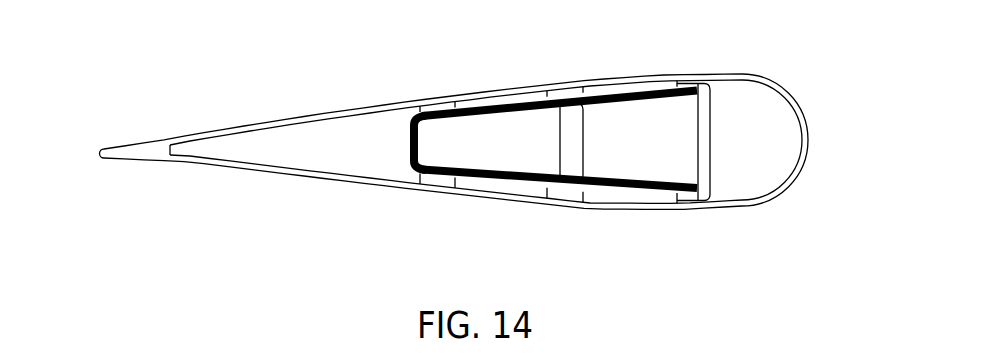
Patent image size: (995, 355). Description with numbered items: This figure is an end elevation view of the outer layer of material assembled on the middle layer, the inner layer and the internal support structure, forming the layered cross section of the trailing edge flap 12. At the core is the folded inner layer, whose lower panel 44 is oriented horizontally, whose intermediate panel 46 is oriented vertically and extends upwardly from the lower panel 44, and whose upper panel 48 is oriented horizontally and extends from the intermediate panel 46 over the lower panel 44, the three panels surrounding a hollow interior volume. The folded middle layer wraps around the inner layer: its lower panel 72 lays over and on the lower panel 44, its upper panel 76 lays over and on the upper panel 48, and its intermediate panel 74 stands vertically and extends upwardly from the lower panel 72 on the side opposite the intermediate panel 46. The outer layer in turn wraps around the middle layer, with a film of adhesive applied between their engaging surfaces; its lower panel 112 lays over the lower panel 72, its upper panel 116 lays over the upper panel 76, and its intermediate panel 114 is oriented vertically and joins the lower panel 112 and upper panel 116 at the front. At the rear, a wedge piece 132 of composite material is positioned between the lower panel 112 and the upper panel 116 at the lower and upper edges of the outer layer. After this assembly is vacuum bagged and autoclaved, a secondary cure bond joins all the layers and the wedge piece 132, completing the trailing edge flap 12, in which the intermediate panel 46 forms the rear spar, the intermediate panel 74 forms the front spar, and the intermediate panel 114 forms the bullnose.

The trailing edge flap 12 is at (783, 62).
The lower panel of the inner layer 44 is at (503, 186).
The intermediate panel of the inner layer 46 is at (410, 124).
The upper panel of the inner layer 48 is at (480, 106).
The lower panel of the middle layer 72 is at (562, 197).
The intermediate panel of the middle layer 74 is at (710, 108).
The upper panel of the middle layer 76 is at (570, 88).
The lower panel of the outer layer 112 is at (660, 211).
The intermediate panel of the outer layer 114 is at (808, 146).
The upper panel of the outer layer 116 is at (653, 75).
The wedge piece 132 is at (173, 152).